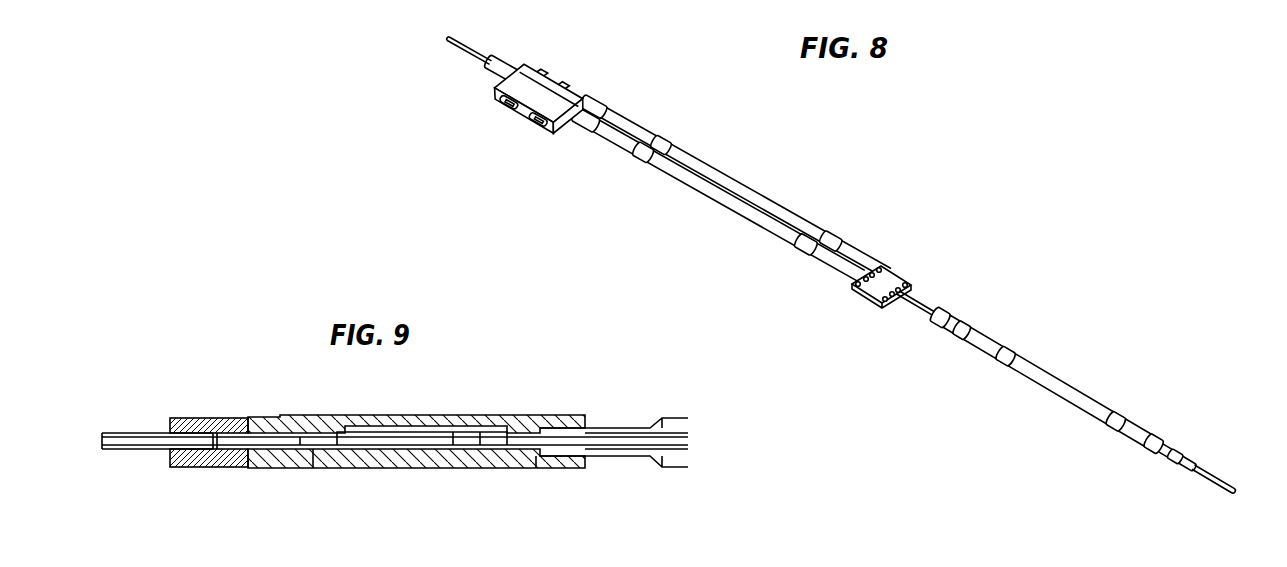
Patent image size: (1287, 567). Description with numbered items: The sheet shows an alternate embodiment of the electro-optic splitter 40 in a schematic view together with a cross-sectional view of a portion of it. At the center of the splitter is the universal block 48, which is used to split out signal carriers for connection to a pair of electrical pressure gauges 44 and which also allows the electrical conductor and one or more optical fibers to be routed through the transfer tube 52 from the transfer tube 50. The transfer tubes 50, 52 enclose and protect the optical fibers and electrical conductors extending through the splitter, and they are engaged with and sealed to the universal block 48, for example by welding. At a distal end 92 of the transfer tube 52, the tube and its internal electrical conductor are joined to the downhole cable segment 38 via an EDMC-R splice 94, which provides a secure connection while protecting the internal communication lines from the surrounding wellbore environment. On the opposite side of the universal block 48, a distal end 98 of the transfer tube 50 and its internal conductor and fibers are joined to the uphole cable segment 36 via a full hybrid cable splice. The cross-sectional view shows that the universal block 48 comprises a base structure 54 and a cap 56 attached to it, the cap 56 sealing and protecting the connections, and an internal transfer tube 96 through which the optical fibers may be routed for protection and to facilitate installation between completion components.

In FIG. 9, the uphole cable segment 36 is at (156, 474).
In FIG. 8, the downhole cable segment 38 is at (1218, 457).
In FIG. 9, the downhole cable segment 38 is at (614, 470).
In FIG. 8, the electro-optic splitter 40 is at (817, 253).
In FIG. 8, the electrical pressure gauges 44 is at (730, 193).
In FIG. 8, the universal block 48 is at (514, 108).
In FIG. 9, the universal block 48 is at (377, 446).
In FIG. 8, the transfer tube 50 is at (508, 47).
In FIG. 8, the transfer tube 52 is at (898, 275).
In FIG. 9, the base structure 54 is at (416, 490).
In FIG. 9, the cap 56 is at (416, 396).
In FIG. 8, the distal end 92 is at (917, 337).
In FIG. 8, the EDMC-R splice 94 is at (1064, 390).
In FIG. 9, the internal transfer tube 96 is at (399, 402).
In FIG. 8, the distal end 98 is at (441, 54).
In FIG. 9, the distal end 98 is at (151, 412).